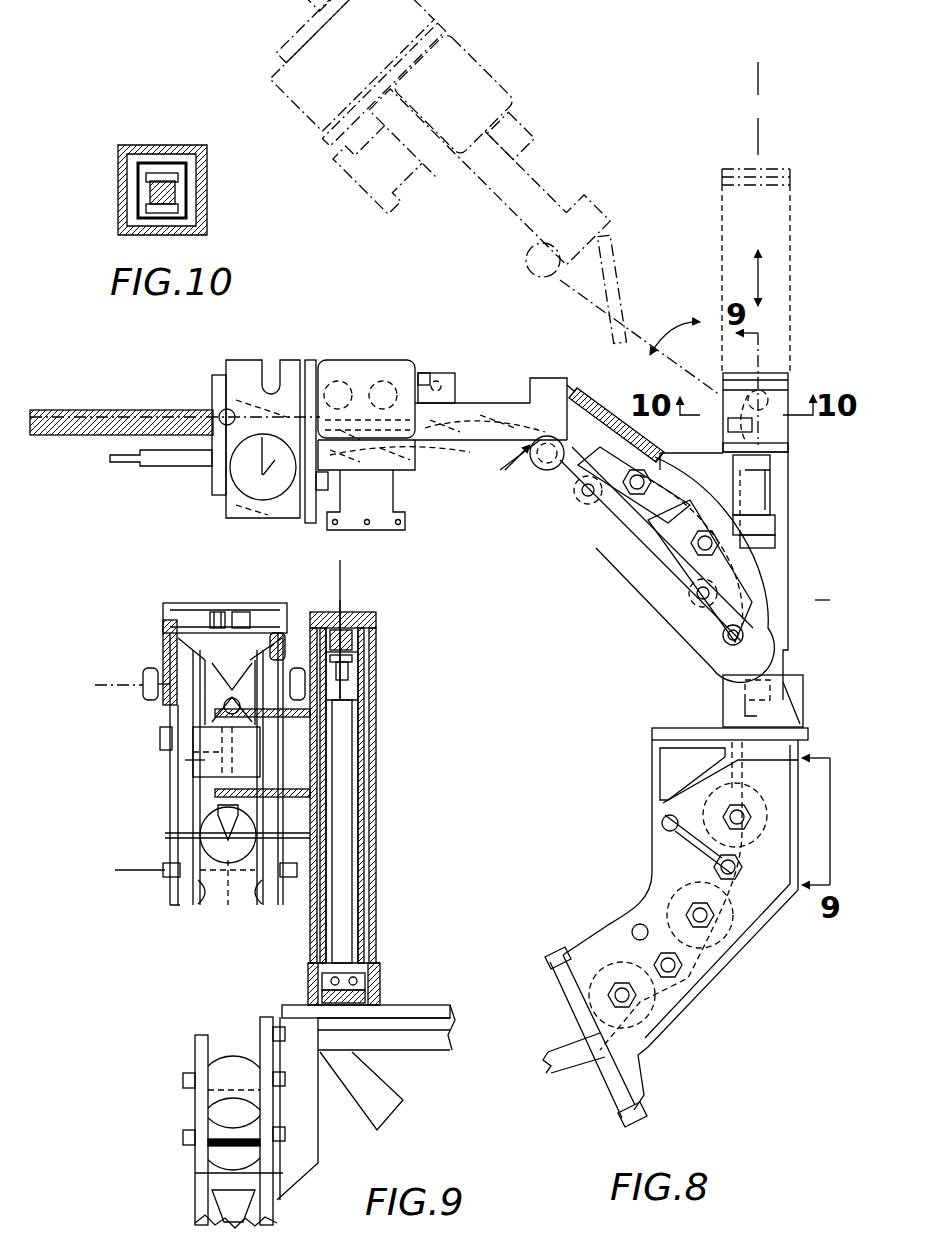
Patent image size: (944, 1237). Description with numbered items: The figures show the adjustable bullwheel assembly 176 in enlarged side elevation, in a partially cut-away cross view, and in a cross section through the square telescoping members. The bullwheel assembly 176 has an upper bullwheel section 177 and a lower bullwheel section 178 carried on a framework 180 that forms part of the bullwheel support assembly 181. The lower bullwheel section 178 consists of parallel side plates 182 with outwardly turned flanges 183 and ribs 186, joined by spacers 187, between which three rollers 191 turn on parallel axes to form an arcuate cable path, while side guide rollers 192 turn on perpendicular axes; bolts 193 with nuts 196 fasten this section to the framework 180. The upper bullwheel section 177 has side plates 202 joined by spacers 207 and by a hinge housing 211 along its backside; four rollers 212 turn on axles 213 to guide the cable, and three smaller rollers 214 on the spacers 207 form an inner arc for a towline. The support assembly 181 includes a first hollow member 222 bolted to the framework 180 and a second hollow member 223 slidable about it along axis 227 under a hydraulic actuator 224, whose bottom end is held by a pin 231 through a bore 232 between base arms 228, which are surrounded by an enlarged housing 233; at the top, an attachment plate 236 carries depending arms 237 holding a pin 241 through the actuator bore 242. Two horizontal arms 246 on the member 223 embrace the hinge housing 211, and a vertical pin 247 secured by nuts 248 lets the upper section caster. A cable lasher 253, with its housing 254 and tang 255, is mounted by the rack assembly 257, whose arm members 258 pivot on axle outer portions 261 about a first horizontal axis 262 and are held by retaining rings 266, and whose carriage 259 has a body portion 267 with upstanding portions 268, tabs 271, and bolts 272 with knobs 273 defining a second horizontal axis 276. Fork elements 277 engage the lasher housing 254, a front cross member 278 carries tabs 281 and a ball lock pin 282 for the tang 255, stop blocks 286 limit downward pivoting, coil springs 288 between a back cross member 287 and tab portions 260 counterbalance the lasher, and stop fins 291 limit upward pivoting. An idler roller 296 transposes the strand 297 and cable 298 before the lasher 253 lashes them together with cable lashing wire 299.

In FIG. 8, the bullwheel assembly 176 is at (830, 600).
In FIG. 8, the upper bullwheel section 177 is at (772, 576).
In FIG. 9, the upper bullwheel section 177 is at (180, 905).
In FIG. 8, the lower bullwheel section 178 is at (840, 758).
In FIG. 9, the framework 180 is at (445, 1050).
In FIG. 9, the bullwheel support assembly 181 is at (460, 990).
In FIG. 9, the side plates 182 is at (262, 1018).
In FIG. 8, the flanges 183 is at (640, 890).
In FIG. 8, the ribs 186 is at (718, 865).
In FIG. 9, the spacers 187 is at (218, 1142).
In FIG. 8, the rollers 191 is at (770, 818).
In FIG. 9, the rollers 191 is at (232, 1068).
In FIG. 8, the side guide rollers 192 is at (600, 1072).
In FIG. 9, the bolts 193 is at (320, 1125).
In FIG. 8, the nuts 196 is at (752, 812).
In FIG. 9, the nuts 196 is at (190, 1075).
In FIG. 8, the side plates 202 is at (690, 640).
In FIG. 9, the spacers 207 is at (205, 825).
In FIG. 8, the hinge housing 211 is at (778, 545).
In FIG. 9, the hinge housing 211 is at (190, 782).
In FIG. 8, the rollers 212 is at (600, 490).
In FIG. 9, the rollers 212 is at (228, 905).
In FIG. 8, the axles 213 is at (778, 520).
In FIG. 9, the axles 213 is at (200, 905).
In FIG. 8, the rollers 214 is at (665, 592).
In FIG. 9, the rollers 214 is at (265, 832).
In FIG. 10, the first hollow member 222 is at (160, 160).
In FIG. 8, the first hollow member 222 is at (790, 672).
In FIG. 9, the first hollow member 222 is at (380, 920).
In FIG. 10, the second hollow member 223 is at (190, 196).
In FIG. 8, the second hollow member 223 is at (790, 392).
In FIG. 9, the second hollow member 223 is at (376, 795).
In FIG. 10, the hydraulic actuator 224 is at (188, 180).
In FIG. 9, the hydraulic actuator 224 is at (364, 715).
In FIG. 8, the vertical axis 227 is at (760, 90).
In FIG. 9, the vertical axis 227 is at (378, 612).
In FIG. 9, the base arms 228 is at (345, 1018).
In FIG. 9, the pin 231 is at (380, 992).
In FIG. 9, the bore 232 is at (325, 1000).
In FIG. 8, the housing 233 is at (723, 708).
In FIG. 9, the housing 233 is at (308, 975).
In FIG. 9, the attachment plate 236 is at (355, 652).
In FIG. 10, the arms 237 is at (148, 208).
In FIG. 9, the arms 237 is at (352, 638).
In FIG. 9, the pin 241 is at (348, 668).
In FIG. 9, the bore 242 is at (376, 615).
In FIG. 8, the arms 246 is at (745, 400).
In FIG. 9, the arms 246 is at (340, 790).
In FIG. 9, the pin 247 is at (185, 760).
In FIG. 8, the nuts 248 is at (755, 428).
In FIG. 9, the nuts 248 is at (193, 735).
In FIG. 8, the cable lasher 253 is at (324, 358).
In FIG. 8, the lasher housing 254 is at (380, 380).
In FIG. 8, the tang 255 is at (448, 373).
In FIG. 8, the rack assembly 257 is at (548, 382).
In FIG. 9, the rack assembly 257 is at (150, 602).
In FIG. 8, the arm members 258 is at (705, 640).
In FIG. 9, the arm members 258 is at (165, 838).
In FIG. 8, the carriage 259 is at (503, 470).
In FIG. 8, the tab portions 260 is at (700, 430).
In FIG. 9, the axle outer portions 261 is at (196, 892).
In FIG. 9, the first horizontal axis 262 is at (128, 872).
In FIG. 8, the retaining rings 266 is at (750, 630).
In FIG. 8, the body portion 267 is at (470, 400).
In FIG. 8, the upstanding portions 268 is at (545, 376).
In FIG. 8, the tabs 271 is at (592, 505).
In FIG. 9, the bolts 272 is at (185, 648).
In FIG. 9, the knobs 273 is at (143, 690).
In FIG. 9, the second horizontal axis 276 is at (118, 684).
In FIG. 8, the fork elements 277 is at (295, 372).
In FIG. 9, the front cross member 278 is at (185, 603).
In FIG. 9, the tabs 281 is at (240, 612).
In FIG. 8, the ball lock pin 282 is at (422, 372).
In FIG. 9, the ball lock pin 282 is at (262, 633).
In FIG. 8, the stop blocks 286 is at (640, 555).
In FIG. 9, the stop blocks 286 is at (160, 742).
In FIG. 8, the back cross member 287 is at (575, 388).
In FIG. 8, the coil springs 288 is at (620, 410).
In FIG. 9, the coil springs 288 is at (163, 660).
In FIG. 9, the stop fins 291 is at (212, 612).
In FIG. 8, the idler roller 296 is at (458, 448).
In FIG. 8, the strand 297 is at (158, 410).
In FIG. 8, the cable 298 is at (98, 446).
In FIG. 8, the cable lashing wire 299 is at (100, 410).